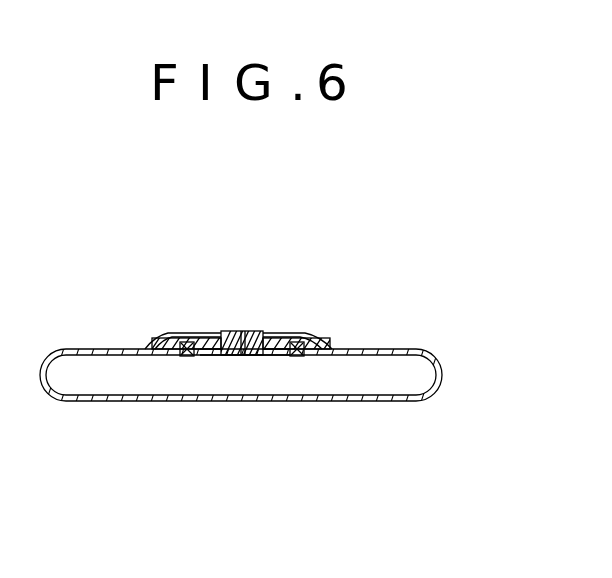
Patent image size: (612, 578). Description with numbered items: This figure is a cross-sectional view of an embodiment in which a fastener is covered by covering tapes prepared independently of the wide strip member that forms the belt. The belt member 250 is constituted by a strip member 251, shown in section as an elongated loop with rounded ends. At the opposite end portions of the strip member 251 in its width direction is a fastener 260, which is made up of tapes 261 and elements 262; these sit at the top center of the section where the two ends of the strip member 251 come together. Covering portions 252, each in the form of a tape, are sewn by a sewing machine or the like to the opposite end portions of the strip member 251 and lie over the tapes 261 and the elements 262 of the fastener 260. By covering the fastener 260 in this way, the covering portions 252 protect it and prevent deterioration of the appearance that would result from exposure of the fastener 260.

The belt member 250 is at (250, 361).
The strip member 251 is at (236, 401).
The covering portion 252 is at (205, 338).
The fastener 260 is at (243, 330).
The tape 261 is at (189, 357).
The element 262 is at (262, 356).